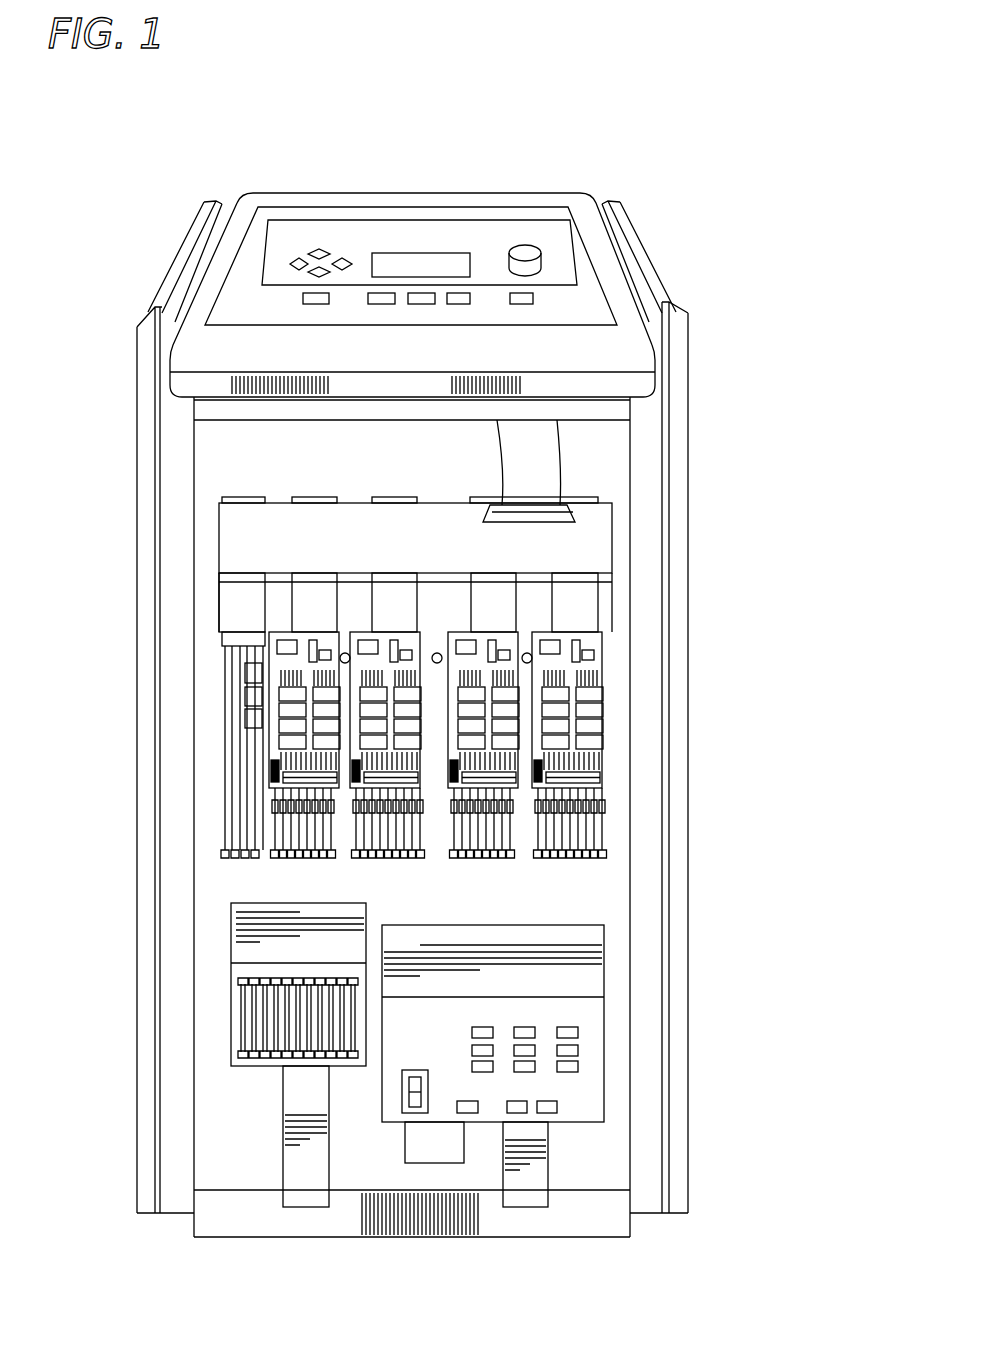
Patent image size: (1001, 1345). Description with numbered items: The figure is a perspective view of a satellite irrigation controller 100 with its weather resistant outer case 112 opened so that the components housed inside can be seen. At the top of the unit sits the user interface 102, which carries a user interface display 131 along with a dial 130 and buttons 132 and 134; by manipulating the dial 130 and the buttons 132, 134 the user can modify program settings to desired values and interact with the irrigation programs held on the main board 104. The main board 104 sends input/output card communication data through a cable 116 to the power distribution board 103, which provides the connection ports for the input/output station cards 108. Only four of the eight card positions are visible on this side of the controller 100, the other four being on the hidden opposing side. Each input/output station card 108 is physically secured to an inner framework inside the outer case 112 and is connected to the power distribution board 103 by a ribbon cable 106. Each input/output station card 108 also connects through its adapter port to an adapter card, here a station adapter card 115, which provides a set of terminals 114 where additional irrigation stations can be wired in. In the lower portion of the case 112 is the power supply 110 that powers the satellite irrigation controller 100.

The satellite irrigation controller 100 is at (768, 388).
The user interface 102 is at (455, 225).
The power distribution board 103 is at (258, 544).
The main board 104 is at (283, 421).
The ribbon cable 106 is at (598, 600).
The input/output station card 108 is at (603, 725).
The power supply 110 is at (597, 1067).
The outer case 112 is at (688, 893).
The terminals 114 is at (312, 856).
The station adapter card 115 is at (287, 827).
The cable 116 is at (545, 465).
The dial 130 is at (525, 252).
The user interface display 131 is at (388, 262).
The buttons 132 is at (288, 263).
The buttons 134 is at (474, 311).